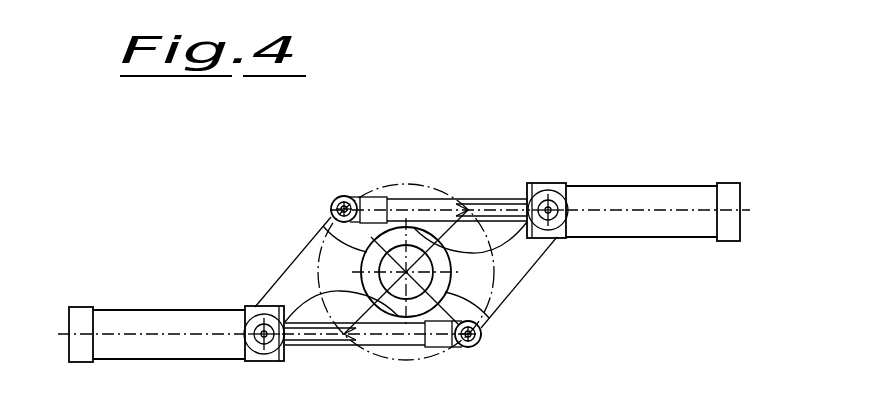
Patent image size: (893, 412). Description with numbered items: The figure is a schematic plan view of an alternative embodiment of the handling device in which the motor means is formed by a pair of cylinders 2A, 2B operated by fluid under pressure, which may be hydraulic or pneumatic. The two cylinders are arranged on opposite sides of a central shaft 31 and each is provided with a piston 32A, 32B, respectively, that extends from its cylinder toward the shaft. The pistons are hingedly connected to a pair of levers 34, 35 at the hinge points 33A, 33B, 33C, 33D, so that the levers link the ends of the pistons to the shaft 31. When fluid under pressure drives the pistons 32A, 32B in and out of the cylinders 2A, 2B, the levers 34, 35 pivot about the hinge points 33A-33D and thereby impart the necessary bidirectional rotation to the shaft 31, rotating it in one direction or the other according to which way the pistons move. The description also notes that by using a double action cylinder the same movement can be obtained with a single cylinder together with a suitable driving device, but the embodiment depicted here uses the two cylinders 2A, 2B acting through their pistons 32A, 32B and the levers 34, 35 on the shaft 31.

The cylinder 2A is at (692, 195).
The cylinder 2B is at (108, 312).
The shaft 31 is at (311, 238).
The piston 32A is at (483, 203).
The piston 32B is at (408, 348).
The hinge connection 33A is at (346, 195).
The hinge connection 33B is at (484, 337).
The hinge connection 33C is at (553, 186).
The hinge connection 33D is at (261, 362).
The lever 34 is at (533, 257).
The lever 35 is at (283, 280).